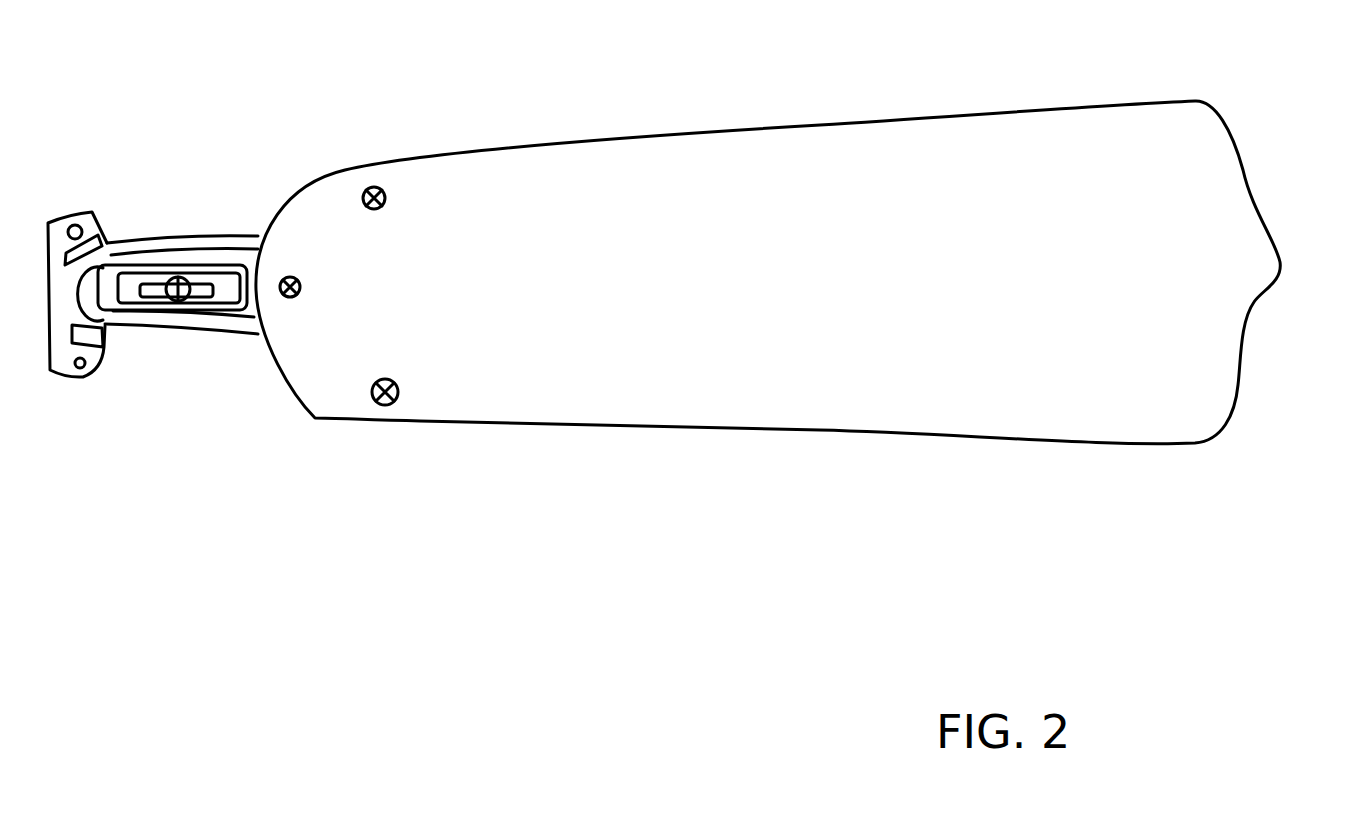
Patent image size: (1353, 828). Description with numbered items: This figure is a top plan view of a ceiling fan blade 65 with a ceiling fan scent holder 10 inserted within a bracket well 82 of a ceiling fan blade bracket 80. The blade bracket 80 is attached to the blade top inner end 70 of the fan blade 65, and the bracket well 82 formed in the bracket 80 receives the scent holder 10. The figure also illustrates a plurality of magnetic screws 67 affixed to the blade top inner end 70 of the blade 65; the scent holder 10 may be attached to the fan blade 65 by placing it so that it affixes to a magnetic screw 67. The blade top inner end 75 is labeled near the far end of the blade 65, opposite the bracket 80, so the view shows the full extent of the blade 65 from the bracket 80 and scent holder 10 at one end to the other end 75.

The ceiling fan scent holder 10 is at (174, 284).
The fan blade 65 is at (870, 100).
The magnetic screw 67 is at (381, 188).
The blade top inner end 70 is at (316, 222).
The blade top inner end 75 is at (1185, 210).
The blade bracket 80 is at (182, 357).
The bracket well 82 is at (113, 290).